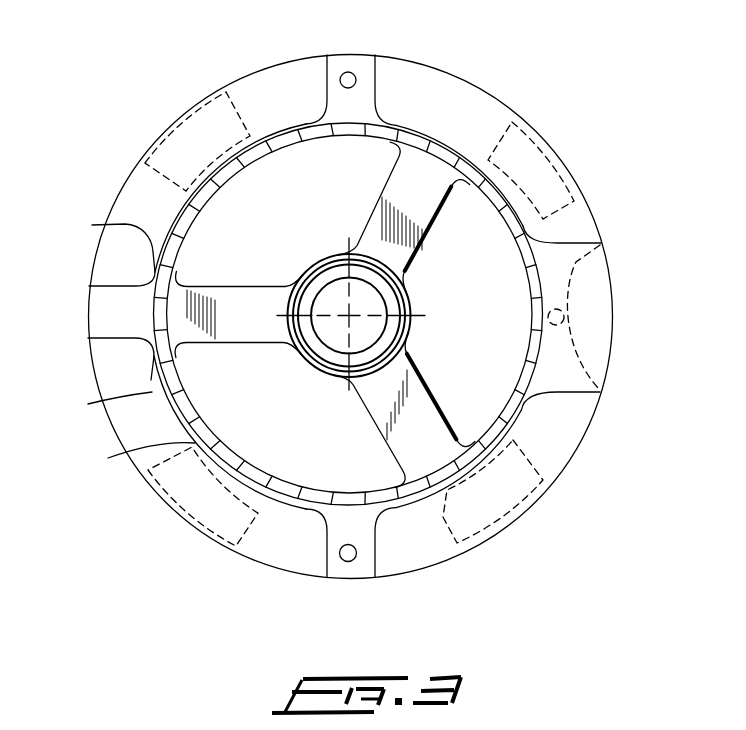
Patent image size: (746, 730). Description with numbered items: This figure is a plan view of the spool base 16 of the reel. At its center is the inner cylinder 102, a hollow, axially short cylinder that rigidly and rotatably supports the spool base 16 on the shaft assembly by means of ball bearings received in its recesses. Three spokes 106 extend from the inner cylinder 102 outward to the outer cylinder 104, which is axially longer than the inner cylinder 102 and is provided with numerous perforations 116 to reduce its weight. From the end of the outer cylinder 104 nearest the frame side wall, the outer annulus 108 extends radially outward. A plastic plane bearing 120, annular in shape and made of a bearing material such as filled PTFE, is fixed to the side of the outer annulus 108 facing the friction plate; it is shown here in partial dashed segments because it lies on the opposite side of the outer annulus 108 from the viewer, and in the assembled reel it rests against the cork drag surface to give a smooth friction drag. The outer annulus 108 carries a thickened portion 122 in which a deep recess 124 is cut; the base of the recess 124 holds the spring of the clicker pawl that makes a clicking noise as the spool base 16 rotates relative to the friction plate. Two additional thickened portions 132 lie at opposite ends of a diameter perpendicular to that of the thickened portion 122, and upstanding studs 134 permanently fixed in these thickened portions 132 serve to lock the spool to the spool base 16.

The spool base 16 is at (568, 463).
The inner cylinder 102 is at (335, 277).
The outer cylinder 104 is at (228, 452).
The spokes 106 is at (423, 232).
The outer annulus 108 is at (480, 87).
The perforations 116 is at (112, 207).
The plane bearing 120 is at (187, 117).
The thickened portion 122 is at (570, 257).
The deep recess 124 is at (617, 311).
The thickened portions 132 is at (362, 60).
The upstanding studs 134 is at (343, 75).